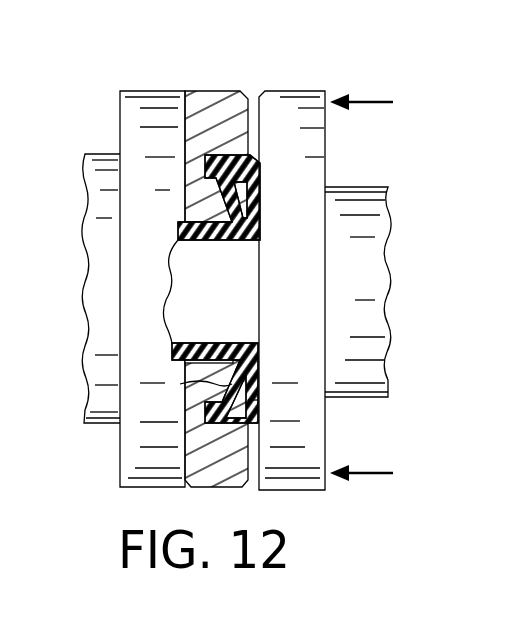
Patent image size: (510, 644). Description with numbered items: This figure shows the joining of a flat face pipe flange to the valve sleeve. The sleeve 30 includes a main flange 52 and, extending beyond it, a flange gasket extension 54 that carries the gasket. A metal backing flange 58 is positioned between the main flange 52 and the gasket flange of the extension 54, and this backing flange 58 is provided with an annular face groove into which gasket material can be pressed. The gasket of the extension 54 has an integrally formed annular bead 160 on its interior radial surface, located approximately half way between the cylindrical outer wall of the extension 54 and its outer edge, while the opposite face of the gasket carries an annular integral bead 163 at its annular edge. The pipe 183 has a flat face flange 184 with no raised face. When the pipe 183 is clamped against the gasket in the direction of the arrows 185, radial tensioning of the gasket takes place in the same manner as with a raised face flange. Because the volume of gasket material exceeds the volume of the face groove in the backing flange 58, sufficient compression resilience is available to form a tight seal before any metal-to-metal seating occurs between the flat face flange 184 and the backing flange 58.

The sleeve 30 is at (76, 221).
The main flange 52 is at (133, 438).
The metal backing flange 58 is at (222, 103).
The flange gasket extension 54 is at (210, 240).
The annular bead 160 is at (183, 383).
The annular bead 163 is at (262, 408).
The flat face flange 184 is at (330, 168).
The pipe 183 is at (367, 267).
The arrows 185 is at (378, 100).